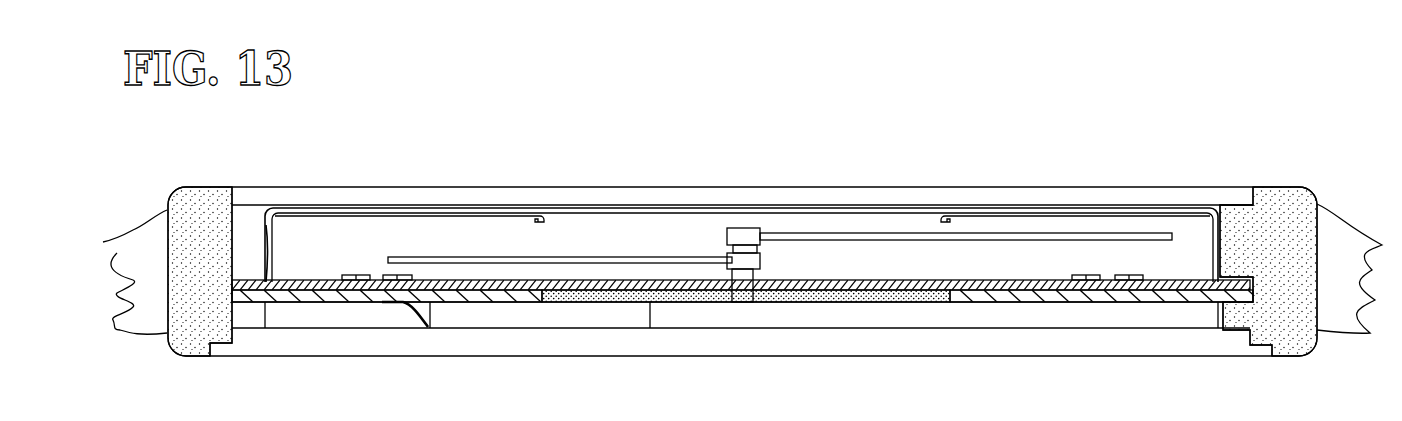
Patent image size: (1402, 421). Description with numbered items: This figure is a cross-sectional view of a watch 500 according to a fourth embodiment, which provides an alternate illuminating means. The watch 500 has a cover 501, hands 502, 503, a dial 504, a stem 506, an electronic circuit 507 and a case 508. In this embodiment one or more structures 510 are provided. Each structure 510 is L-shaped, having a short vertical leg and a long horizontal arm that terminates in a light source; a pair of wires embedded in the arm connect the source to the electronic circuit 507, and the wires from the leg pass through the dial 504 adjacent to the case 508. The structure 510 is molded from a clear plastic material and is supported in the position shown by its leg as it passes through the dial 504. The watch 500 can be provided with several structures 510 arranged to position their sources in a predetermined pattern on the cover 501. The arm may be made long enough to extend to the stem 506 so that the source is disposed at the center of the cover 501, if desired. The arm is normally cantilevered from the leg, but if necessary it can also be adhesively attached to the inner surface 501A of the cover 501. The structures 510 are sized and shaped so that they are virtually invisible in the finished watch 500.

The watch 500 is at (1292, 143).
The cover 501 is at (380, 187).
The inner surface of cover 501A is at (580, 205).
The hand 502 is at (613, 255).
The hand 503 is at (835, 233).
The dial 504 is at (870, 280).
The stem 506 is at (728, 243).
The electronic circuit 507 is at (330, 290).
The case 508 is at (1302, 189).
The structure 510 is at (273, 260).